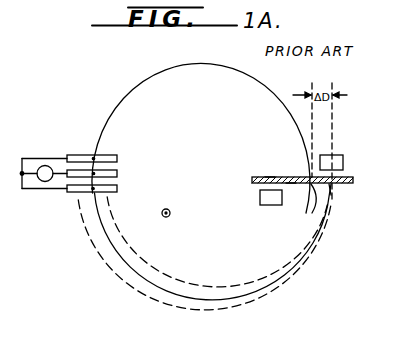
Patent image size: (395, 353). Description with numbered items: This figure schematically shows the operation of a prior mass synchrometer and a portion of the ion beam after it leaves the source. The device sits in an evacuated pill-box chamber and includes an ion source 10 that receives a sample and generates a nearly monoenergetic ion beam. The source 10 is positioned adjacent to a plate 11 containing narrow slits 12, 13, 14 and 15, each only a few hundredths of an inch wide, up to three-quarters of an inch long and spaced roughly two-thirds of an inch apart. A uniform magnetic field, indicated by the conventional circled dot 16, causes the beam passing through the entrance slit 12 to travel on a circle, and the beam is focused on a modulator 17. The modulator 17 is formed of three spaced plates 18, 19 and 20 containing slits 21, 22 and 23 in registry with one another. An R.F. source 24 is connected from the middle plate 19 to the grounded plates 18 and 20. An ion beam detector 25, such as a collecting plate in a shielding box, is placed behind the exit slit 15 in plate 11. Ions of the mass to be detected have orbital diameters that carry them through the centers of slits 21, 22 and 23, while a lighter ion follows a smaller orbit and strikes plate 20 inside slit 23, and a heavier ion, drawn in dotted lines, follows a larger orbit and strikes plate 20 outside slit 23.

The ion source 10 is at (343, 161).
The plate 11 is at (262, 176).
The entrance slit 12 is at (334, 186).
The slit 13 is at (304, 207).
The slit 14 is at (290, 184).
The exit slit 15 is at (270, 176).
The uniform magnetic field 16 is at (170, 209).
The modulator 17 is at (95, 142).
The plate 18 is at (117, 158).
The plate 19 is at (117, 174).
The plate 20 is at (117, 188).
The slit 21 is at (93, 156).
The slit 22 is at (77, 193).
The slit 23 is at (93, 193).
The R.F. source 24 is at (44, 181).
The ion beam detector 25 is at (268, 206).